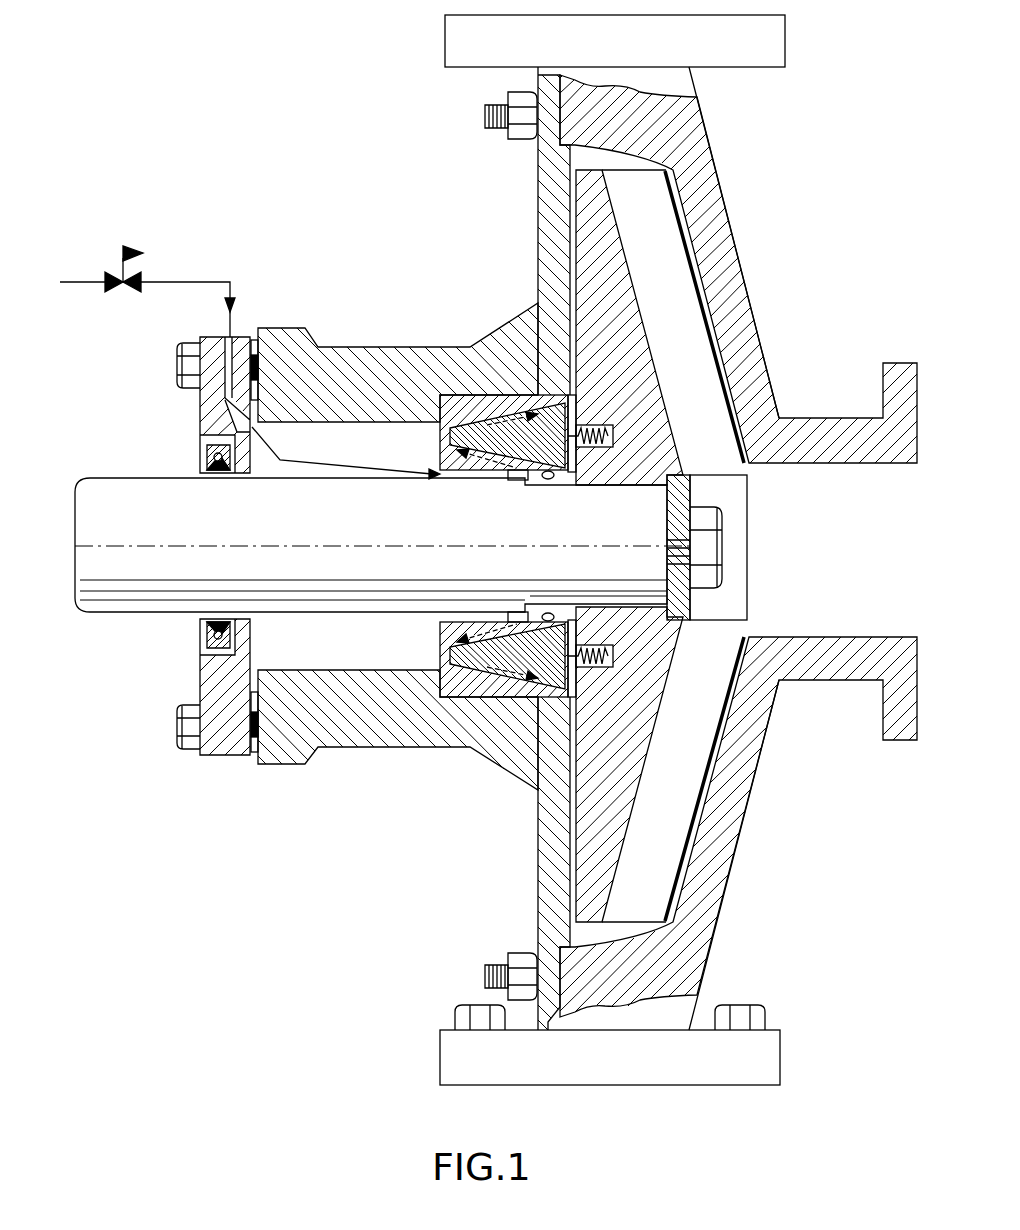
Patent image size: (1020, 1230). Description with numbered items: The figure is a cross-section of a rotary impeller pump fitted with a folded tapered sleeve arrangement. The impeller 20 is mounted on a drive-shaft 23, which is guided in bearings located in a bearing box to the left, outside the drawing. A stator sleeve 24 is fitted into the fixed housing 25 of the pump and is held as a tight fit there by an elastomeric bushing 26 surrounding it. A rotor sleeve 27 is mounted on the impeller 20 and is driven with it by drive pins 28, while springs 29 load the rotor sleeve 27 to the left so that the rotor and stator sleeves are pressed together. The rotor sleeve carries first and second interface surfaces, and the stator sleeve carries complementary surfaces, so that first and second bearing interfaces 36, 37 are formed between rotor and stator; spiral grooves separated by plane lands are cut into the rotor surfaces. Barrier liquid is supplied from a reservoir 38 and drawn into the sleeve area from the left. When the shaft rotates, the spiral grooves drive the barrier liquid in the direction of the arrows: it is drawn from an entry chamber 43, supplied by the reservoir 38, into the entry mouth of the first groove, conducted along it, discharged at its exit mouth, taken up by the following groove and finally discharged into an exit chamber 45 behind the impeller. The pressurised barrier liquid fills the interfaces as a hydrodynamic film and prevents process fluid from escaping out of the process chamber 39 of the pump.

The impeller 20 is at (647, 327).
The drive-shaft 23 is at (115, 612).
The stator sleeve 24 is at (453, 688).
The housing 25 is at (347, 737).
The elastomeric bushing 26 is at (455, 393).
The rotor sleeve 27 is at (463, 660).
The drive pins 28 is at (577, 472).
The springs 29 is at (605, 622).
The first bearing interface 36 is at (510, 468).
The second bearing interface 37 is at (487, 425).
The reservoir 38 is at (227, 317).
The process chamber 39 is at (652, 165).
The entry chamber 43 is at (346, 453).
The exit chamber 45 is at (608, 412).